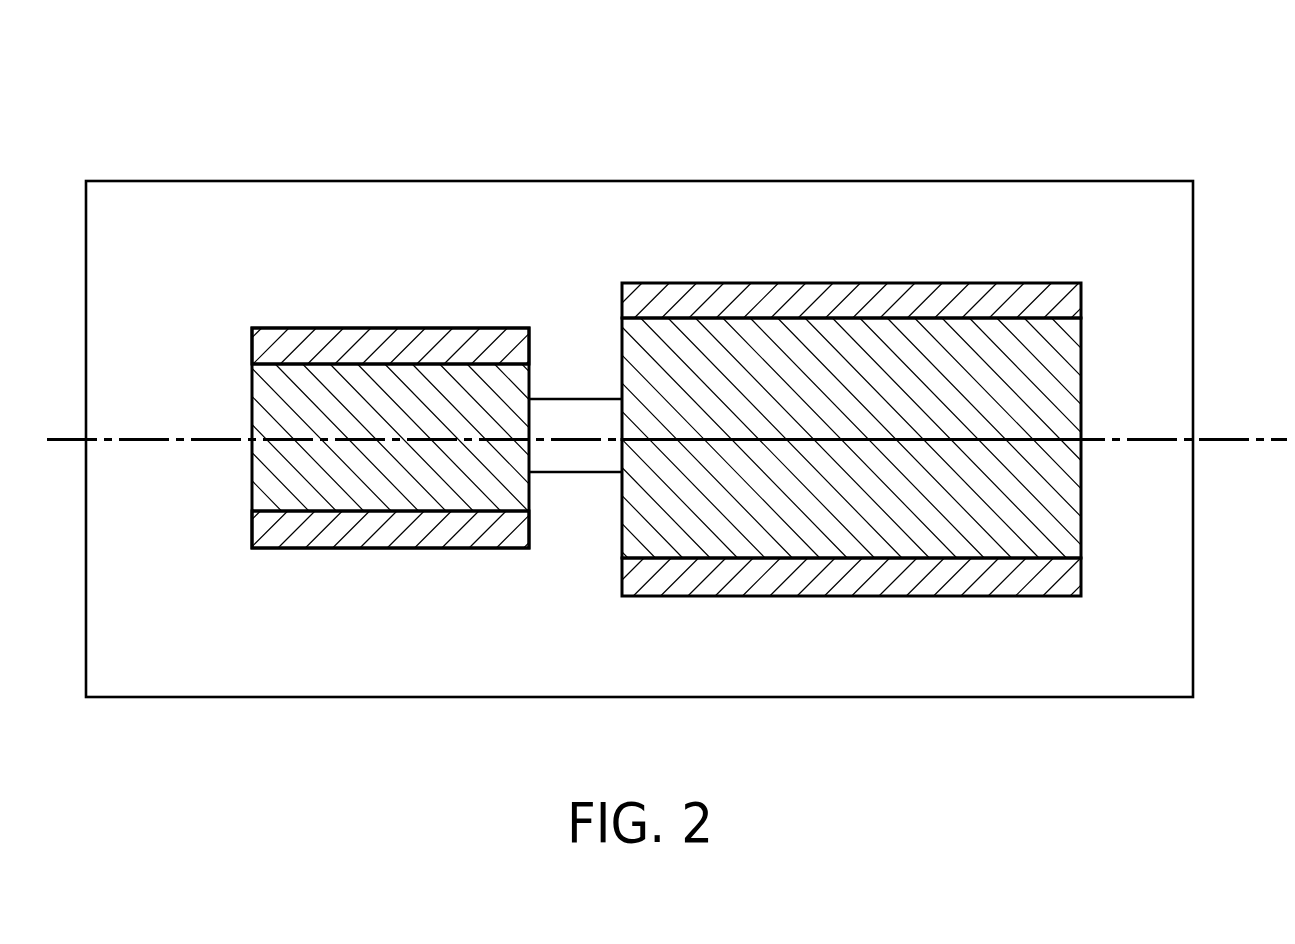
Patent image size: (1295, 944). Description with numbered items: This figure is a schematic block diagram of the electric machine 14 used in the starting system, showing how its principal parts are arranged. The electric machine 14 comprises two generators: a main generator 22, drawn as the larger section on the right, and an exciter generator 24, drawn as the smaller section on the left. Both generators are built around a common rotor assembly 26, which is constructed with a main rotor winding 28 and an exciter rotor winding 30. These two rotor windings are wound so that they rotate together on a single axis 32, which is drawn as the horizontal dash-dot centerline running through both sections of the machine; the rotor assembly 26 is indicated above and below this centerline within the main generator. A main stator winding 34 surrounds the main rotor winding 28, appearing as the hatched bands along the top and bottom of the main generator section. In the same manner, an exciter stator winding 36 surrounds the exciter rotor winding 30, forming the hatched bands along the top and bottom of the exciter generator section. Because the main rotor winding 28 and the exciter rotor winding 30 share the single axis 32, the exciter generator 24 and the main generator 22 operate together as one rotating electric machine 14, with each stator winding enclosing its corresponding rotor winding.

The electric machine 14 is at (377, 143).
The main generator 22 is at (870, 282).
The exciter generator 24 is at (398, 327).
The rotor assembly 26 is at (1081, 370).
The main rotor winding 28 is at (1081, 508).
The exciter rotor winding 30 is at (252, 401).
The single axis 32 is at (1263, 438).
The main stator winding 34 is at (870, 597).
The exciter stator winding 36 is at (404, 549).